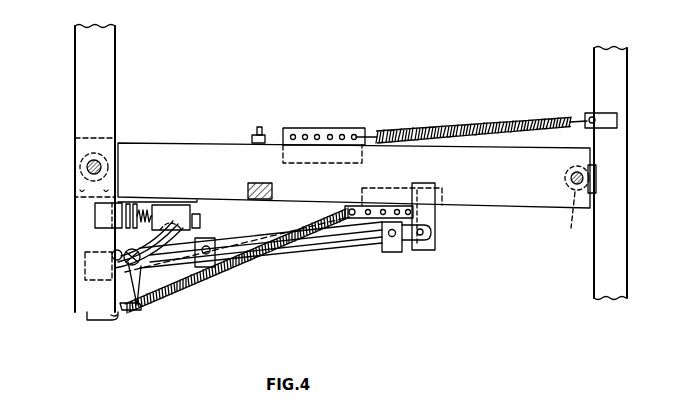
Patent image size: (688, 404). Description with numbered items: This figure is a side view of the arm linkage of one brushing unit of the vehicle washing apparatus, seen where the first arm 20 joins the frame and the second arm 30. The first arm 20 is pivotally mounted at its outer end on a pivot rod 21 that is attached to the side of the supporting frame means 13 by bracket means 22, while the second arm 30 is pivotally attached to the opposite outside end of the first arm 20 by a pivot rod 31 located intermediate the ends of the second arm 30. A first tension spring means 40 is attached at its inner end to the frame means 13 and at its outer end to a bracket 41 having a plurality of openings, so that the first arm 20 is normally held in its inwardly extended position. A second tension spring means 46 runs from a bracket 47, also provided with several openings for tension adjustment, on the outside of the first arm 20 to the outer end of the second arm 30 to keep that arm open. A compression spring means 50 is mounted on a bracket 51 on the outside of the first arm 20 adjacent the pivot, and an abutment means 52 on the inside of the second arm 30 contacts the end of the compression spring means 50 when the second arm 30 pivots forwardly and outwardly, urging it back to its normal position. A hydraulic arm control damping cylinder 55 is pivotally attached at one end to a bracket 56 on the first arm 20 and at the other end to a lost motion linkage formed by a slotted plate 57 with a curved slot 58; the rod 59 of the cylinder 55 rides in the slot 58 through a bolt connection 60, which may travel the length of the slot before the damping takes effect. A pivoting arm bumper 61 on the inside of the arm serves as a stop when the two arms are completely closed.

The supporting frame means 13 is at (617, 173).
The first arm 20 is at (178, 148).
The pivot rod 21 is at (568, 179).
The bracket means 22 is at (572, 220).
The second arm 30 is at (105, 78).
The pivot rod 31 is at (85, 167).
The first tension spring means 40 is at (483, 125).
The bracket 41 is at (340, 128).
The second tension spring means 46 is at (190, 288).
The bracket 47 is at (388, 207).
The compression spring means 50 is at (144, 203).
The bracket 51 is at (215, 198).
The abutment means 52 is at (95, 213).
The hydraulic arm control damping unit or cylinder 55 is at (312, 257).
The bracket 56 is at (410, 243).
The slotted plate 57 is at (130, 258).
The curved slot 58 is at (140, 304).
The rod 59 is at (167, 292).
The bolt connection 60 is at (118, 252).
The pivoting arm bumper 61 is at (252, 131).